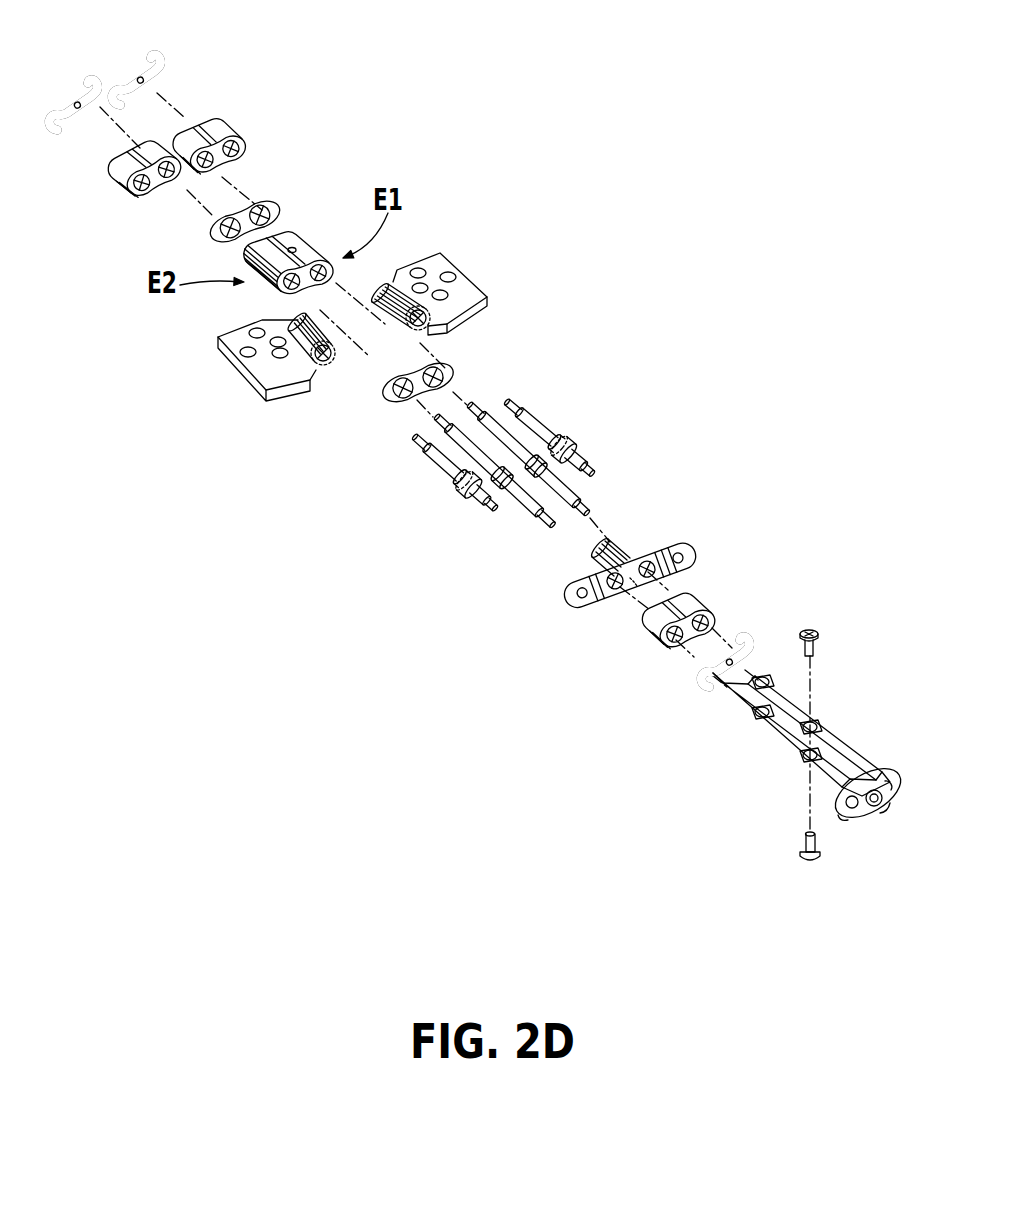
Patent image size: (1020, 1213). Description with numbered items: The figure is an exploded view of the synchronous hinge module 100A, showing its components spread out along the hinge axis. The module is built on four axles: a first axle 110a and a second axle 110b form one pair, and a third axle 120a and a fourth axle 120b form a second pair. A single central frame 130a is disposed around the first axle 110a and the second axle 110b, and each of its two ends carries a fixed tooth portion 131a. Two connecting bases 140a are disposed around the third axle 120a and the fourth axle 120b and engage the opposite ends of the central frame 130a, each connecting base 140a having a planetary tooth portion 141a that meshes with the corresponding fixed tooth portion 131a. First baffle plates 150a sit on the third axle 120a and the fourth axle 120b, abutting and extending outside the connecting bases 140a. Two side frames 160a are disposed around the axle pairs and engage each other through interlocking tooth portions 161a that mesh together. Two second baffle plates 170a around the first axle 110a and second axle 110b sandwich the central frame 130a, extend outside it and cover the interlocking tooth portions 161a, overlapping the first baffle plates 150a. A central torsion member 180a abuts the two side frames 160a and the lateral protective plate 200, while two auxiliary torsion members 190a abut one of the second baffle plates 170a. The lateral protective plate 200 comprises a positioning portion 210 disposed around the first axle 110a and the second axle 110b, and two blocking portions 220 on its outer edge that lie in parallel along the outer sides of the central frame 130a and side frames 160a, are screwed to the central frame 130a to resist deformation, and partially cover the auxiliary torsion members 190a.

The synchronous hinge module 100A is at (887, 957).
The first axle 110a is at (563, 490).
The second axle 110b is at (527, 507).
The third axle 120a is at (570, 452).
The fourth axle 120b is at (477, 493).
The central frame 130a is at (285, 240).
The fixed tooth portion 131a is at (270, 290).
The connecting base 140a is at (468, 292).
The planetary tooth portion 141a is at (403, 268).
The first baffle plate 150a is at (482, 473).
The side frame 160a is at (672, 542).
The interlocking tooth portion 161a is at (622, 548).
The second baffle plate 170a is at (217, 233).
The central torsion member 180a is at (695, 607).
The auxiliary torsion member 190a is at (222, 133).
The lateral protective plate 200 is at (834, 745).
The positioning portion 210 is at (897, 780).
The blocking portion 220 is at (837, 748).